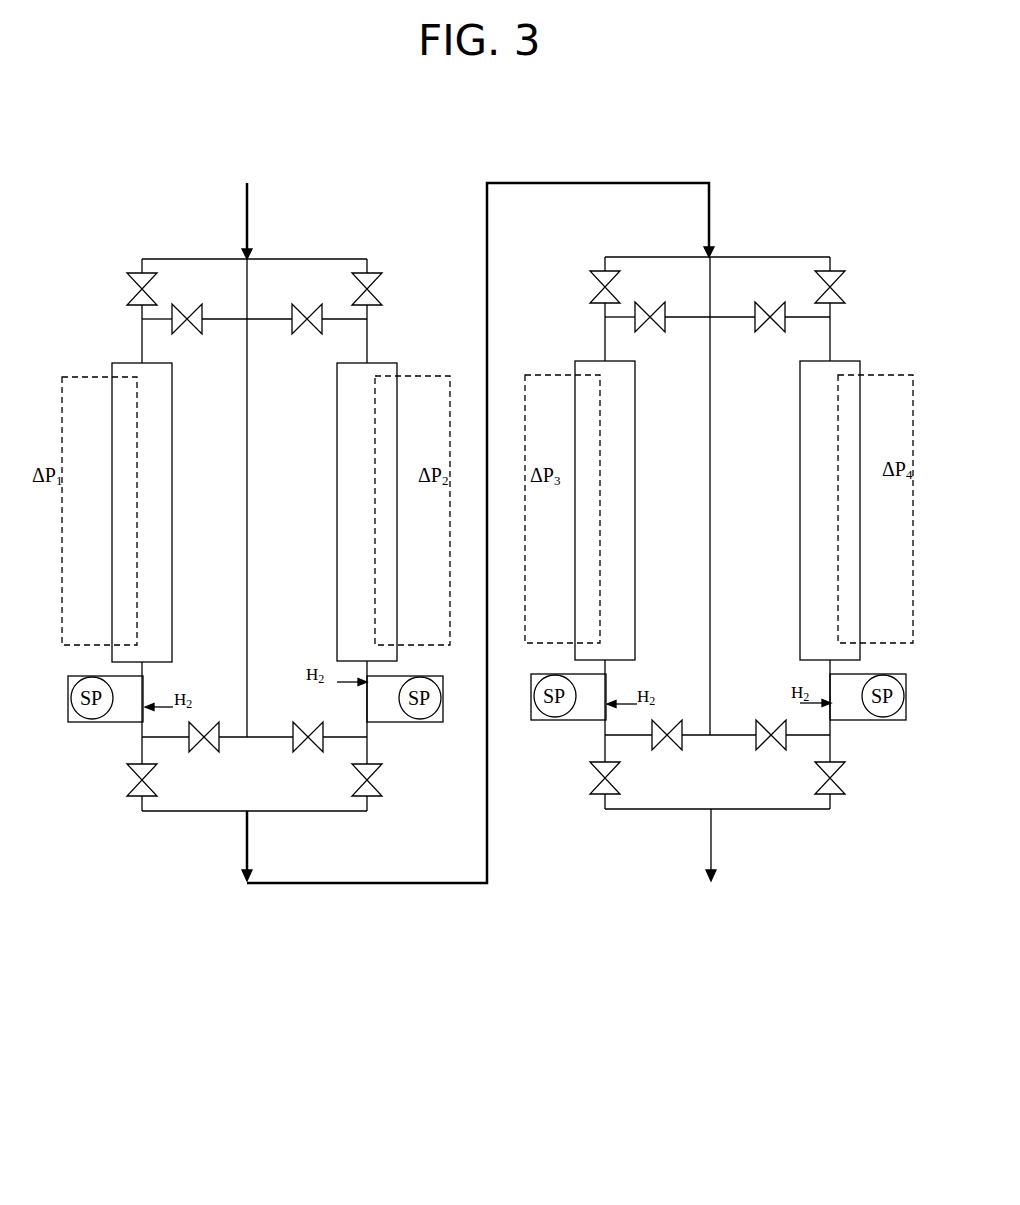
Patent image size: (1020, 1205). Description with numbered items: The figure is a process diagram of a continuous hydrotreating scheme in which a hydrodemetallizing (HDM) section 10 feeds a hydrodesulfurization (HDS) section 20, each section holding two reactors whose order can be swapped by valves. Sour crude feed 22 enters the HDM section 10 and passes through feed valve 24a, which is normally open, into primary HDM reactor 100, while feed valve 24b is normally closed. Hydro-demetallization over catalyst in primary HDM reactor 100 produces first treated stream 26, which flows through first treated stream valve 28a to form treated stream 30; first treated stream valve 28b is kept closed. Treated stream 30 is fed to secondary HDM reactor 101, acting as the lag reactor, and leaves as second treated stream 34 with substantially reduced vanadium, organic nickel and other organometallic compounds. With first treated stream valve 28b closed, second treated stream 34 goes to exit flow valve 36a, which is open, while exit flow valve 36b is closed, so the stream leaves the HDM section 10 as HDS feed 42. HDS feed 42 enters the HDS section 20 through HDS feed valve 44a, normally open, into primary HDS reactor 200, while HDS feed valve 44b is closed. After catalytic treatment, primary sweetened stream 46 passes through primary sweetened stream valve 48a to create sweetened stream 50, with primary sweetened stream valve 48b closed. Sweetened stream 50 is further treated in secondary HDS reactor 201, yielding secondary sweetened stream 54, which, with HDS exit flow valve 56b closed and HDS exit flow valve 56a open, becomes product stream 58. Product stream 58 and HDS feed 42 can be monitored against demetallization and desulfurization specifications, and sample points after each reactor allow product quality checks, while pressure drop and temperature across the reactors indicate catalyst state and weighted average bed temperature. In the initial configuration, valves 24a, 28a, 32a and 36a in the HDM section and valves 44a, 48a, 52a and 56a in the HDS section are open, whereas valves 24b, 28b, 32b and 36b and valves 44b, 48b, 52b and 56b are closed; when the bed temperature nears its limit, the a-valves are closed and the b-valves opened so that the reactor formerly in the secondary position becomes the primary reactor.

The hydrodemetallizing section 10 is at (178, 936).
The hydrodesulfurization section 20 is at (693, 934).
The sour crude feed 22 is at (249, 222).
The feed valve 24a is at (128, 291).
The feed valve 24b is at (358, 291).
The first treated stream 26 is at (143, 676).
The first treated stream valve 28a is at (196, 724).
The first treated stream valve 28b is at (322, 722).
The treated stream 30 is at (247, 464).
The valve 32a is at (302, 310).
The valve 32b is at (183, 310).
The second treated stream 34 is at (366, 670).
The exit flow valve 36a is at (355, 767).
The exit flow valve 36b is at (155, 767).
The hydrodesulfurization feed 42 is at (373, 883).
The HDS feed valve 44a is at (601, 290).
The HDS feed valve 44b is at (842, 286).
The primary sweetened stream 46 is at (606, 676).
The primary sweetened stream valve 48a is at (660, 722).
The primary sweetened stream valve 48b is at (786, 721).
The sweetened stream 50 is at (711, 484).
The valve 52a is at (786, 310).
The valve 52b is at (643, 310).
The secondary sweetened stream 54 is at (829, 678).
The HDS exit flow valve 56a is at (817, 765).
The HDS exit flow valve 56b is at (619, 765).
The product stream 58 is at (712, 860).
The primary HDM reactor 100 is at (159, 413).
The secondary HDM reactor 101 is at (383, 413).
The primary HDS reactor 200 is at (620, 413).
The secondary HDS reactor 201 is at (844, 413).